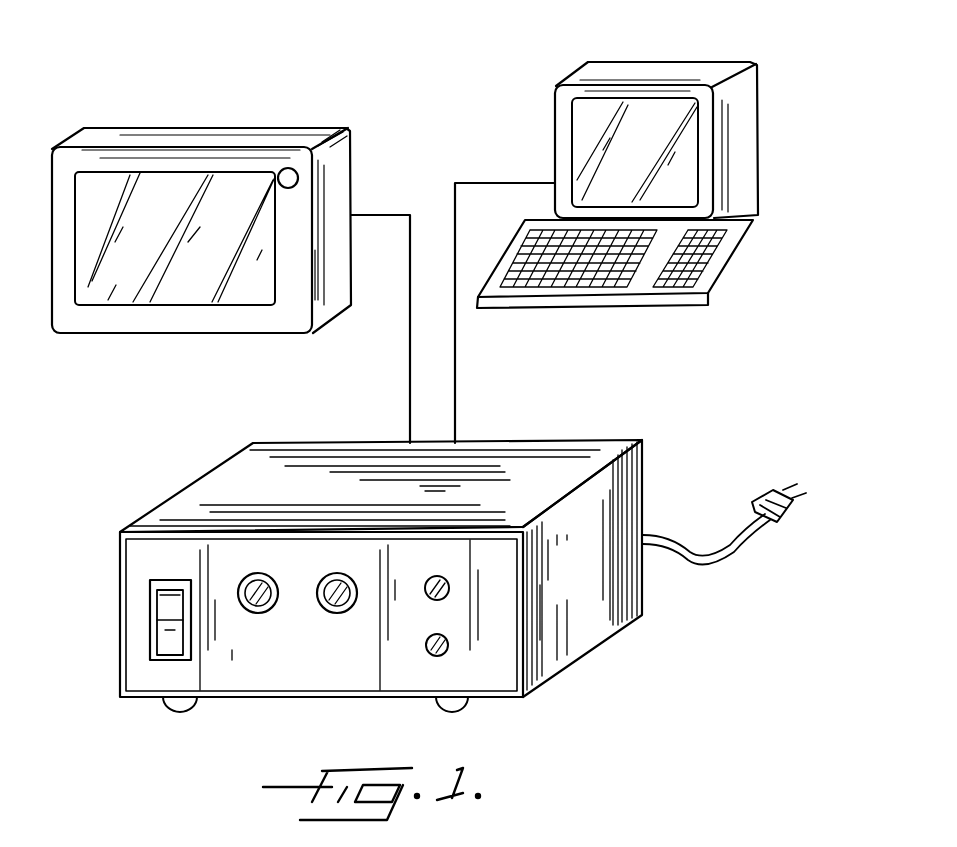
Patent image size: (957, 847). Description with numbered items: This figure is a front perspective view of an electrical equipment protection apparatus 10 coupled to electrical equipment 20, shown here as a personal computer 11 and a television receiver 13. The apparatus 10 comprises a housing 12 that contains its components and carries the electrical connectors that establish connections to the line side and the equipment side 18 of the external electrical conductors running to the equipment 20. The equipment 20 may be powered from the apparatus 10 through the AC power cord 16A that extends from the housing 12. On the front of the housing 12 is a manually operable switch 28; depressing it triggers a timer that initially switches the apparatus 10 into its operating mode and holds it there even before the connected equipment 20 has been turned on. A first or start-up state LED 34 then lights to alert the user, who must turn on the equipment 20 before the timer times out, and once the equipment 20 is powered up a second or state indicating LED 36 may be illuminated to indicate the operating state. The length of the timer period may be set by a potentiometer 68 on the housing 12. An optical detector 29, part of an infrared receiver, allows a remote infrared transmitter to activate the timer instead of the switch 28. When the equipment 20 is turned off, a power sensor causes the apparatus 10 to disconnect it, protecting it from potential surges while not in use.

The electrical equipment 20 is at (405, 101).
The television receiver 13 is at (256, 128).
The personal computer 11 is at (633, 62).
The equipment side 18 is at (455, 355).
The electrical equipment protection apparatus 10 is at (652, 402).
The housing 12 is at (580, 630).
The manually operable switch 28 is at (150, 624).
The first or start-up state LED 34 is at (260, 573).
The second or state indicating LED 36 is at (337, 573).
The optical detector 29 is at (425, 598).
The potentiometer 68 is at (433, 656).
The AC power cord 16A is at (720, 555).